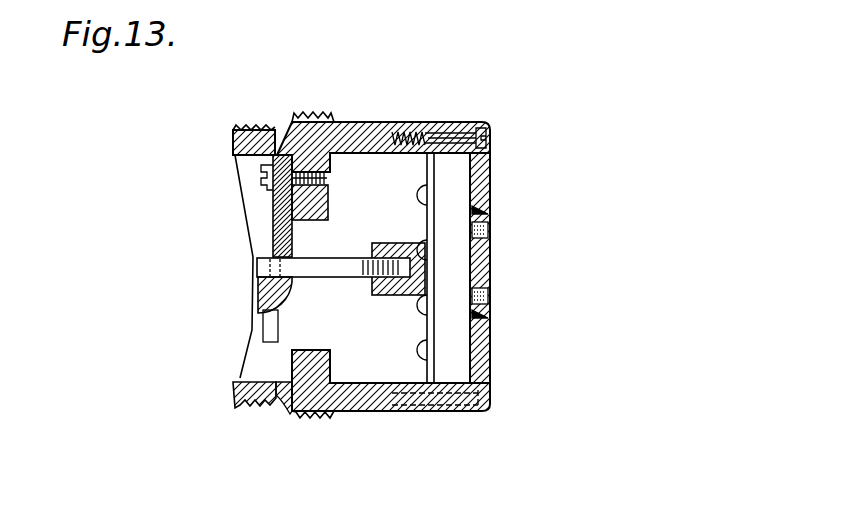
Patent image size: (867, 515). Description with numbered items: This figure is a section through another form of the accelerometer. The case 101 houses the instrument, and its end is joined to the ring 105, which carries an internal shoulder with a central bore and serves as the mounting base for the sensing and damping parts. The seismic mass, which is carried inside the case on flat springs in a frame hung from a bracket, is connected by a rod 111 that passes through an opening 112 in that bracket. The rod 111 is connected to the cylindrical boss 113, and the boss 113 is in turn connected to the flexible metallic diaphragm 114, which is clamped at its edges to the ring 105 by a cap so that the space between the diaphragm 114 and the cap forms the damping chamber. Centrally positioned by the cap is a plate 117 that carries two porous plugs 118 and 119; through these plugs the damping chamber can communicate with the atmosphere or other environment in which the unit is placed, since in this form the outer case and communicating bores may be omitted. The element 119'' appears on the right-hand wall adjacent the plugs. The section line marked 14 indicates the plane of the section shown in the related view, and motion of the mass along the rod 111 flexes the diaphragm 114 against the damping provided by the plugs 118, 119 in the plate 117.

The section line 14- 14 is at (470, 460).
The case 101 is at (246, 122).
The ring 105 is at (356, 150).
The rod 111 is at (258, 267).
The opening 112 is at (282, 240).
The cylindrical boss 113 is at (387, 297).
The flexible metallic diaphragm 114 is at (435, 188).
The plate 117 is at (490, 263).
The porous plug 118 is at (490, 233).
The porous plug 119 is at (527, 296).
The insert 119'' is at (526, 333).